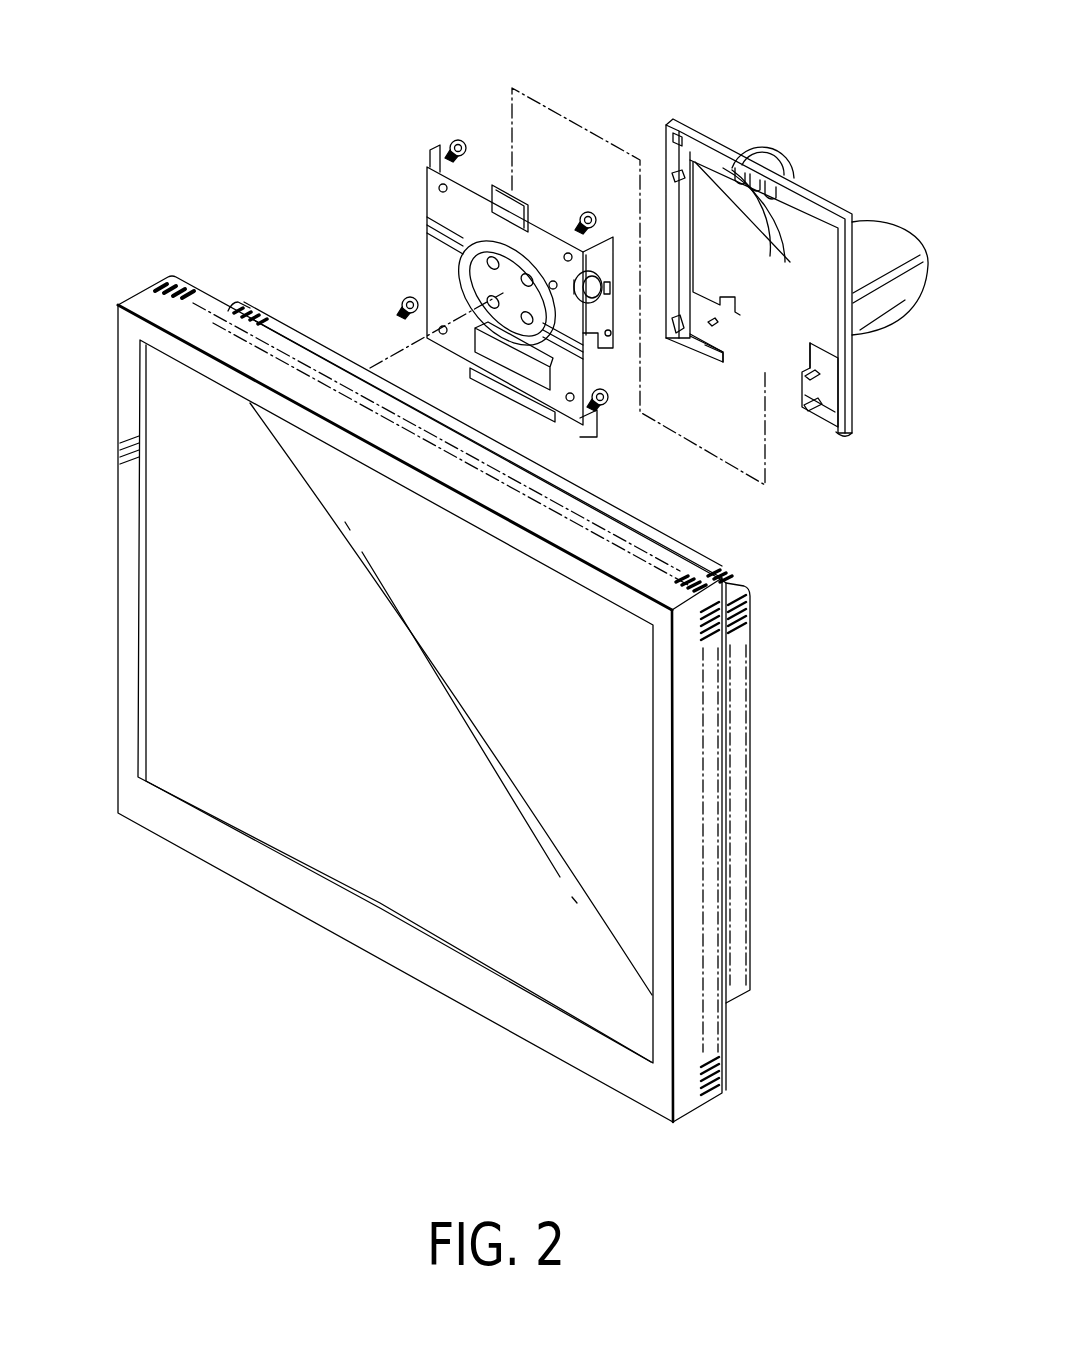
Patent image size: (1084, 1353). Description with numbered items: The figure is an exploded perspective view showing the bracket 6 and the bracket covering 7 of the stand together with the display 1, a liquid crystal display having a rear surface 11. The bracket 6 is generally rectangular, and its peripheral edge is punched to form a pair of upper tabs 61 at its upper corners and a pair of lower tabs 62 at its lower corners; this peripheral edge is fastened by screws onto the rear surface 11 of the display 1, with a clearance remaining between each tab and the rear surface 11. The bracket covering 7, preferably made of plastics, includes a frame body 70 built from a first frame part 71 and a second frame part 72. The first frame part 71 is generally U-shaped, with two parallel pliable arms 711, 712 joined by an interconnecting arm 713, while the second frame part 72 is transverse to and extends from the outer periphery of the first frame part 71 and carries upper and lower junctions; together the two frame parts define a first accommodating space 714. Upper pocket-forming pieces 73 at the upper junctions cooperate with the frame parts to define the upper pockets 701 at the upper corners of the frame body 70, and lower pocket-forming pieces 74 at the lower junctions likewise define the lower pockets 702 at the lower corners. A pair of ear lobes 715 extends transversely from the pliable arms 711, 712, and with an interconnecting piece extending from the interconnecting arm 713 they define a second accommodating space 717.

The display 1 is at (162, 554).
The rear surface 11 is at (290, 335).
The bracket 6 is at (402, 244).
The upper tabs 61 is at (430, 160).
The lower tabs 62 is at (433, 338).
The bracket covering 7 is at (750, 124).
The frame body 70 is at (745, 120).
The upper pockets 701 is at (717, 162).
The lower pockets 702 is at (734, 321).
The first frame part 71 is at (733, 320).
The pliable arm 711 is at (823, 397).
The pliable arm 712 is at (694, 228).
The interconnecting arm 713 is at (803, 218).
The first accommodating space 714 is at (730, 360).
The ear lobes 715 is at (762, 140).
The second accommodating space 717 is at (798, 200).
The second frame part 72 is at (708, 128).
The upper pocket-forming pieces 73 is at (690, 148).
The lower pocket-forming pieces 74 is at (683, 322).